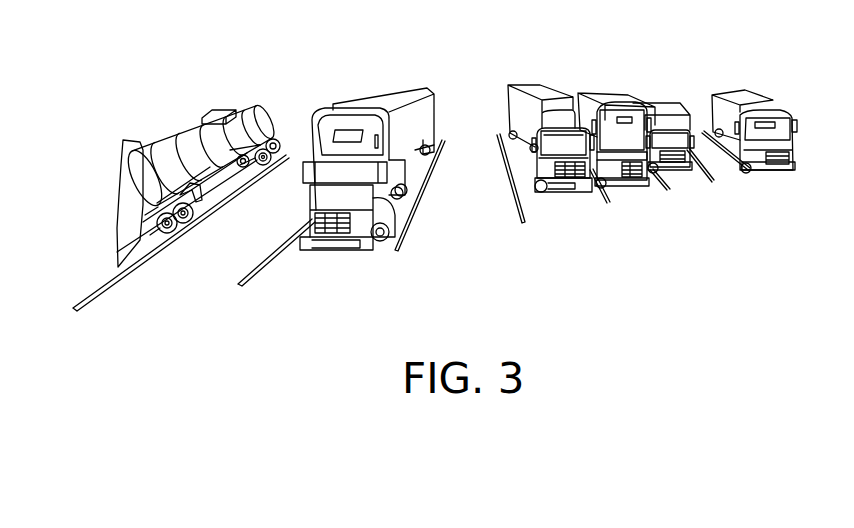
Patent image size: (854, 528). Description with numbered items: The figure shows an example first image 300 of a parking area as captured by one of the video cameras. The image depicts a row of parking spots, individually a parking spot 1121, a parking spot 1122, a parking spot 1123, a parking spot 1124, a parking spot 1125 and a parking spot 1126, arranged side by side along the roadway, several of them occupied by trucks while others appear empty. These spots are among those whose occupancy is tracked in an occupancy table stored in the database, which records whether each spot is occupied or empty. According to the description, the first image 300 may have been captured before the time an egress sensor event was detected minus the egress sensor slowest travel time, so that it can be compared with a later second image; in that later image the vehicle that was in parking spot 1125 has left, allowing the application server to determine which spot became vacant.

The first image 300 is at (411, 44).
The parking spot 1121 is at (185, 280).
The parking spot 1122 is at (332, 262).
The parking spot 1123 is at (472, 233).
The parking spot 1124 is at (570, 203).
The parking spot 1125 is at (637, 197).
The parking spot 1126 is at (690, 185).